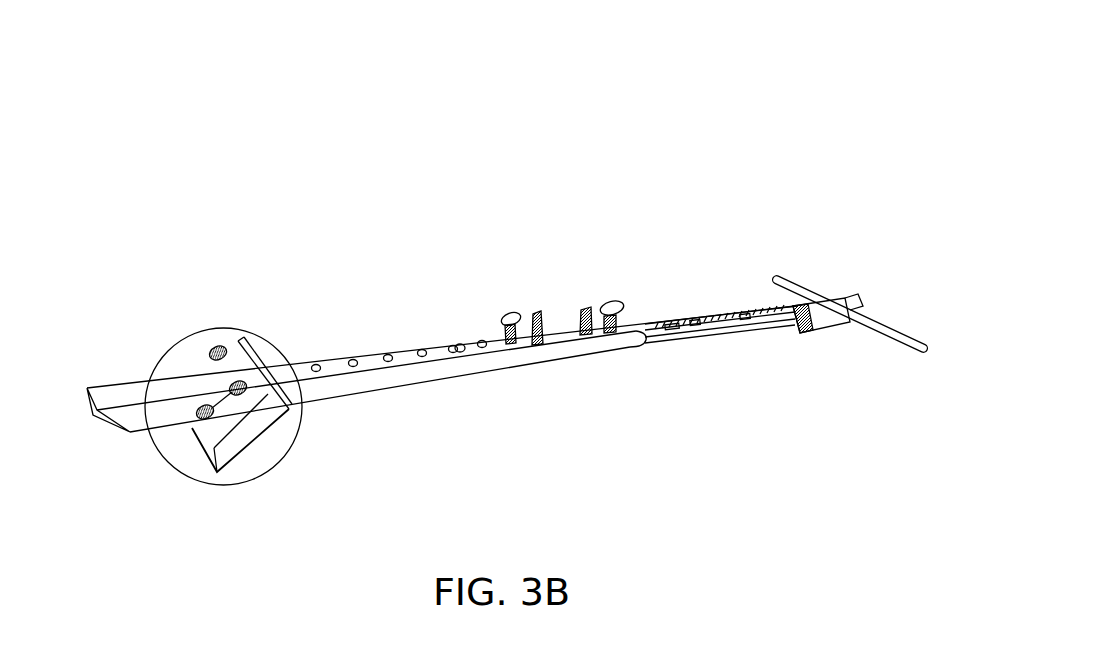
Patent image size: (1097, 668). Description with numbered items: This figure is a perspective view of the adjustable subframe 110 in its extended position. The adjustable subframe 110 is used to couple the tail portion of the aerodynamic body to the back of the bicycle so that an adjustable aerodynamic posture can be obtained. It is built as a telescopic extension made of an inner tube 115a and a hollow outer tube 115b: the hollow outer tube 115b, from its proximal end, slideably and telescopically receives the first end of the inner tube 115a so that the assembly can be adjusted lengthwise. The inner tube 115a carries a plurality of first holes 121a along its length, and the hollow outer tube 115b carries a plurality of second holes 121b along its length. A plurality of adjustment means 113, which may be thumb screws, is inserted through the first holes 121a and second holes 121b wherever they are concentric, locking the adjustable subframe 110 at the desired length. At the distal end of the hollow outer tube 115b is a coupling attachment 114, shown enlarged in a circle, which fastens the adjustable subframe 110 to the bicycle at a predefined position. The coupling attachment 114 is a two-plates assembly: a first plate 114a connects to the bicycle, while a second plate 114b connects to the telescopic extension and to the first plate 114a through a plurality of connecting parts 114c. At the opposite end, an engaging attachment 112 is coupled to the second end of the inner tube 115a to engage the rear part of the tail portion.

The adjustable subframe 110 is at (532, 210).
The engaging attachment 112 is at (820, 300).
The adjustment means 113 is at (586, 310).
The coupling attachment 114 is at (214, 347).
The first plate 114a is at (197, 378).
The second plate 114b is at (270, 413).
The connecting parts 114c is at (216, 347).
The inner tube 115a is at (715, 318).
The hollow outer tube 115b is at (397, 348).
The first holes 121a is at (697, 325).
The second holes 121b is at (462, 349).